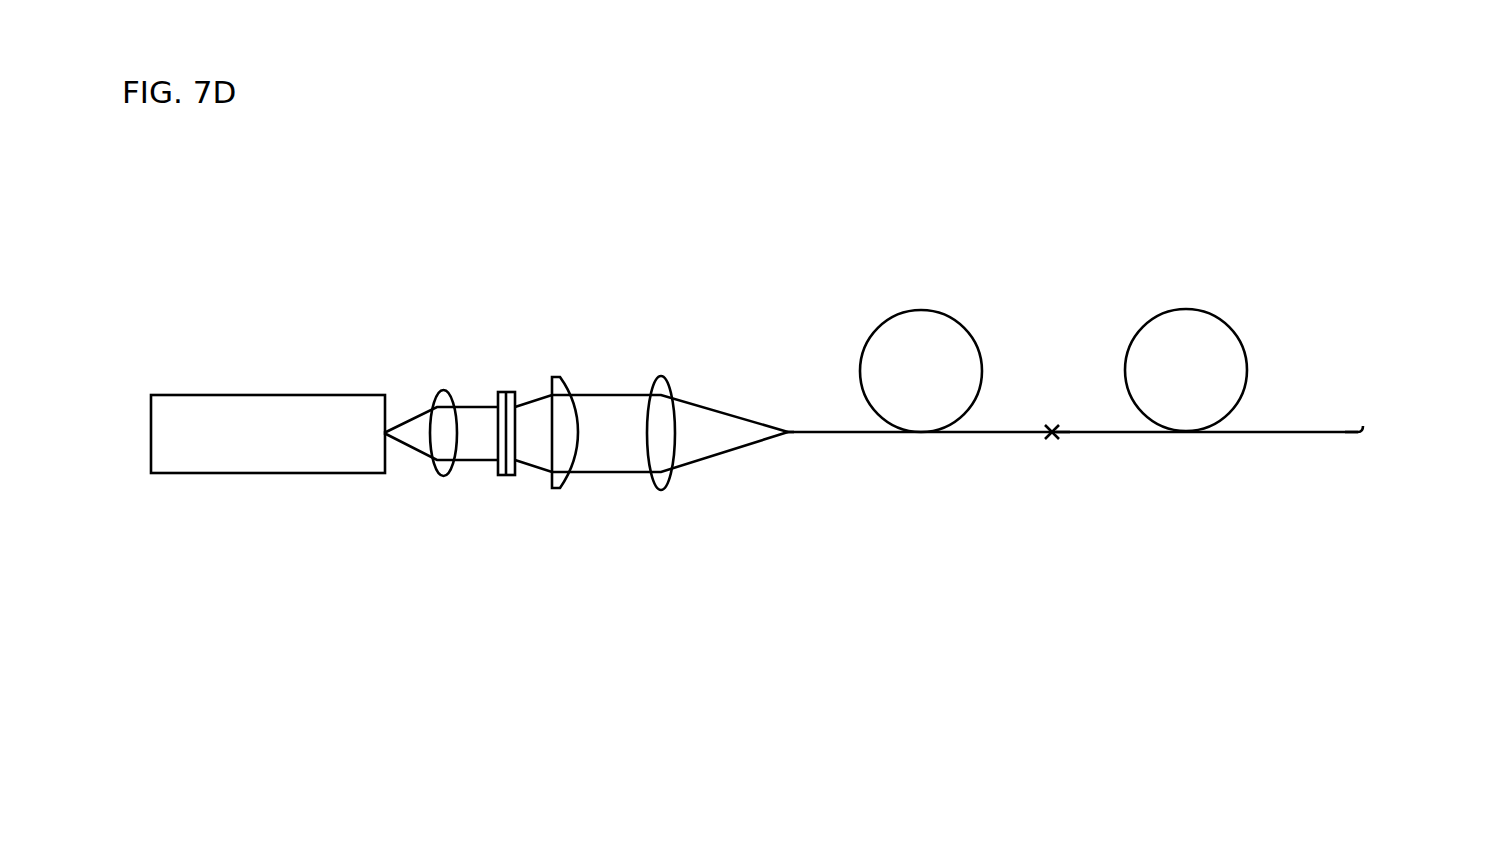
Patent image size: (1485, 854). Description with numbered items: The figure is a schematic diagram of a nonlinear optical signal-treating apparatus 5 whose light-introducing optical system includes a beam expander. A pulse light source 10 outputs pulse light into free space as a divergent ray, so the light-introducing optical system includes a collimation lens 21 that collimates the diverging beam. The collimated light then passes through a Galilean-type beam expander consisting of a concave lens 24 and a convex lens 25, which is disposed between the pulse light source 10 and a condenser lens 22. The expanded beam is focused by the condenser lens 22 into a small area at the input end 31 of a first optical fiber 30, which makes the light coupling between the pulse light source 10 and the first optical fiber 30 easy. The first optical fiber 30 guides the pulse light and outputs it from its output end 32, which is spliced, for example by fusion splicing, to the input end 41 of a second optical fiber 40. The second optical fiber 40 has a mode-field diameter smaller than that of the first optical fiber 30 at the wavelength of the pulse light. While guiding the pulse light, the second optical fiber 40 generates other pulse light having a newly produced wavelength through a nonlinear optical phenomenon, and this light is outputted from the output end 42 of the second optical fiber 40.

The nonlinear optical signal-treating apparatus 5 is at (1396, 228).
The pulse light source 10 is at (279, 393).
The collimation lens 21 is at (453, 390).
The concave lens 24 is at (508, 392).
The convex lens 25 is at (571, 386).
The condenser lens 22 is at (671, 378).
The input end of the first optical fiber 31 is at (786, 430).
The first optical fiber 30 is at (968, 327).
The output end of the first optical fiber 32 is at (1046, 428).
The input end of the second optical fiber 41 is at (1062, 428).
The second optical fiber 40 is at (1233, 330).
The output end of the second optical fiber 42 is at (1363, 426).